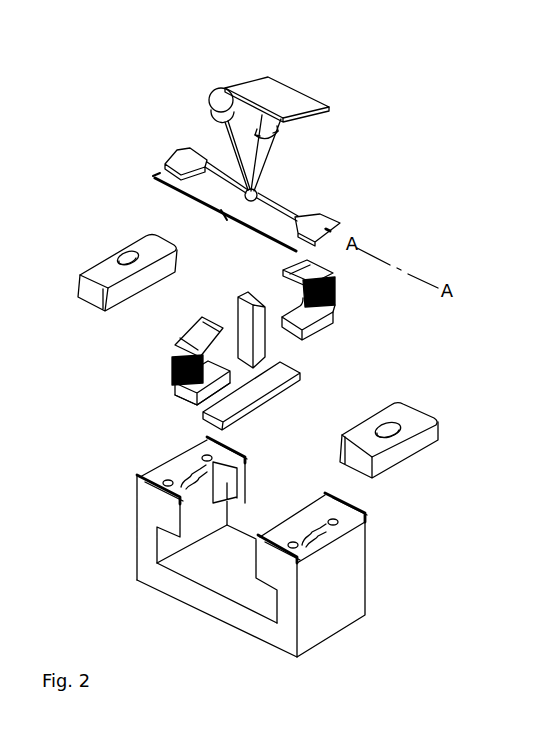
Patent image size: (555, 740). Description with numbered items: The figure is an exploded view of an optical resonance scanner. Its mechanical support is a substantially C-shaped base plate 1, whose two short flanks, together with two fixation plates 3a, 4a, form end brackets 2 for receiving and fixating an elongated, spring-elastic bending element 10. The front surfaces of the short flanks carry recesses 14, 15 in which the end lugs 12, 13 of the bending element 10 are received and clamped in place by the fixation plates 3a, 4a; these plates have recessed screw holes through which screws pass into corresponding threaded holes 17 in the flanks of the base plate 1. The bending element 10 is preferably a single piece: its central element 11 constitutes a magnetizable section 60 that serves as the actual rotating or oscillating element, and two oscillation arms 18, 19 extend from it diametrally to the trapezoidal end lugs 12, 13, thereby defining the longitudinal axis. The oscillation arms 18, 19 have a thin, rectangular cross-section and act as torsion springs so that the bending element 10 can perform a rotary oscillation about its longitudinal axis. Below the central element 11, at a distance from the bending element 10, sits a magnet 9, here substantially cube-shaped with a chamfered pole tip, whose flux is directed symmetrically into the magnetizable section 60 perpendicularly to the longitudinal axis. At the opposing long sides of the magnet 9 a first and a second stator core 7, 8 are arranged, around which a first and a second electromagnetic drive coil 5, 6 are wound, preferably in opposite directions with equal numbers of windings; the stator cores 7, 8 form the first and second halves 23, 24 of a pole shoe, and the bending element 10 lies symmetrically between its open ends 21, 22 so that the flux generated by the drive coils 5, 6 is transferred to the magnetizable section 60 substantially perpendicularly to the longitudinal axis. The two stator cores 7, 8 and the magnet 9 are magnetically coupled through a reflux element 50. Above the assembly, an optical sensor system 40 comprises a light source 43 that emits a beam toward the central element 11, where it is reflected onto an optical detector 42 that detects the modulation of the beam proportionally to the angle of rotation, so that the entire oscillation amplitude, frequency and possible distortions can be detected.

The base plate 1 is at (228, 580).
The end brackets 2 is at (160, 513).
The fixation plate 3a is at (127, 257).
The fixation plate 4a is at (405, 447).
The first electromagnetic drive coil 5 is at (172, 360).
The second electromagnetic drive coil 6 is at (336, 283).
The first stator core 7 is at (176, 398).
The second stator core 8 is at (308, 332).
The magnet 9 is at (245, 328).
The bending element 10 is at (259, 162).
The central element 11 is at (283, 192).
The end lug 12 is at (165, 162).
The end lug 13 is at (318, 228).
The recess 14 is at (167, 457).
The recess 15 is at (343, 537).
The threaded holes 17 is at (357, 504).
The oscillation arm 18 is at (212, 158).
The oscillation arm 19 is at (287, 199).
The open end of the pole shoe 21 is at (200, 318).
The open end of the pole shoe 22 is at (285, 275).
The first half of the pole shoe 23 is at (178, 388).
The second half of the pole shoe 24 is at (334, 313).
The optical sensor system 40 is at (195, 53).
The optical detector 42 is at (288, 102).
The light source 43 is at (215, 100).
The reflux element 50 is at (253, 393).
The magnetizable section 60 is at (205, 204).